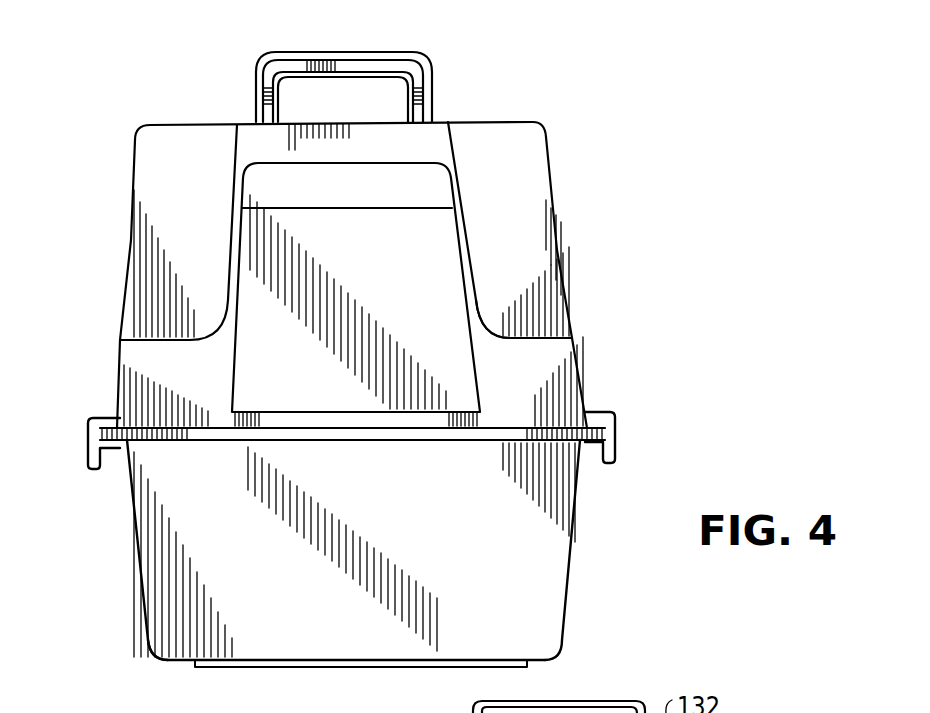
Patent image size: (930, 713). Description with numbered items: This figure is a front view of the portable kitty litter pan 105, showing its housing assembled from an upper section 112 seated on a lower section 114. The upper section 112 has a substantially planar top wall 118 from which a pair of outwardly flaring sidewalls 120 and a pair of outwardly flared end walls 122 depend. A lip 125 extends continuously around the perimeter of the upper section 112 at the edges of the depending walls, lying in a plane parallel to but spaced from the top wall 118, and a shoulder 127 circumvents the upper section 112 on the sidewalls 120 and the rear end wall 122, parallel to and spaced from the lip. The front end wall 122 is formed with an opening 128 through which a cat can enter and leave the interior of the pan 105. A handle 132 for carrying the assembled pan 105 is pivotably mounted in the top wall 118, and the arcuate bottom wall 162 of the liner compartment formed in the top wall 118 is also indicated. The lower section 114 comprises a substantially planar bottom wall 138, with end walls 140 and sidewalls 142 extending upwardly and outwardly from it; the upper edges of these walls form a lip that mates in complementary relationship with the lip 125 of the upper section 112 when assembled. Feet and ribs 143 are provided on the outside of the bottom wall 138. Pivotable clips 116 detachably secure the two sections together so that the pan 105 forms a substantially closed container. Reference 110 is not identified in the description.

The portable kitty litter pan 105 is at (100, 530).
The cover 110 is at (588, 244).
The upper section 112 is at (447, 117).
The lower section 114 is at (588, 536).
The pivotable clips 116 is at (102, 415).
The top wall 118 is at (175, 125).
The sidewalls 120 is at (130, 220).
The end walls 122 is at (508, 178).
The lip 125 is at (607, 433).
The shoulder 127 is at (573, 338).
The opening 128 is at (453, 221).
The handle 132 is at (257, 80).
The bottom wall 138 is at (378, 670).
The end walls 140 is at (496, 572).
The sidewalls 142 is at (565, 602).
The feet and ribs 143 is at (232, 672).
The arcuate bottom wall 162 is at (316, 187).